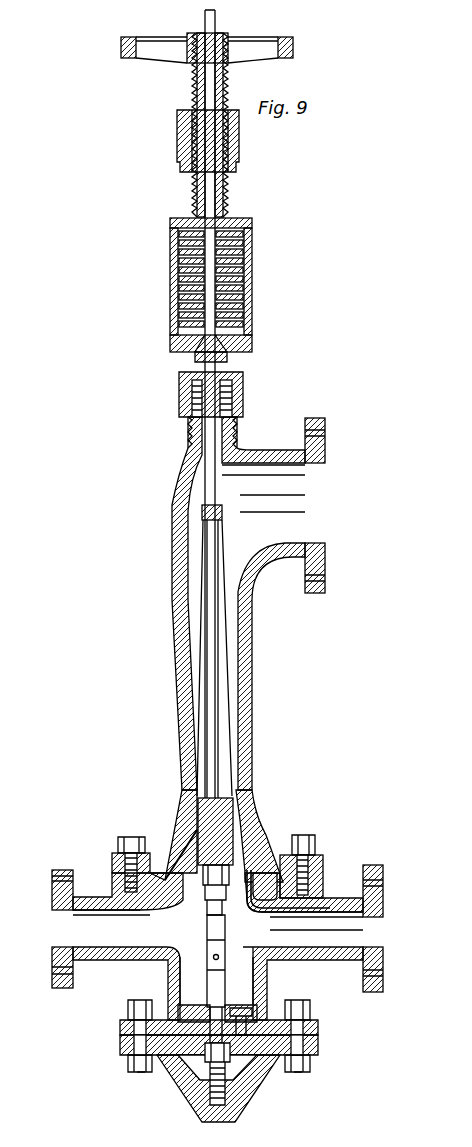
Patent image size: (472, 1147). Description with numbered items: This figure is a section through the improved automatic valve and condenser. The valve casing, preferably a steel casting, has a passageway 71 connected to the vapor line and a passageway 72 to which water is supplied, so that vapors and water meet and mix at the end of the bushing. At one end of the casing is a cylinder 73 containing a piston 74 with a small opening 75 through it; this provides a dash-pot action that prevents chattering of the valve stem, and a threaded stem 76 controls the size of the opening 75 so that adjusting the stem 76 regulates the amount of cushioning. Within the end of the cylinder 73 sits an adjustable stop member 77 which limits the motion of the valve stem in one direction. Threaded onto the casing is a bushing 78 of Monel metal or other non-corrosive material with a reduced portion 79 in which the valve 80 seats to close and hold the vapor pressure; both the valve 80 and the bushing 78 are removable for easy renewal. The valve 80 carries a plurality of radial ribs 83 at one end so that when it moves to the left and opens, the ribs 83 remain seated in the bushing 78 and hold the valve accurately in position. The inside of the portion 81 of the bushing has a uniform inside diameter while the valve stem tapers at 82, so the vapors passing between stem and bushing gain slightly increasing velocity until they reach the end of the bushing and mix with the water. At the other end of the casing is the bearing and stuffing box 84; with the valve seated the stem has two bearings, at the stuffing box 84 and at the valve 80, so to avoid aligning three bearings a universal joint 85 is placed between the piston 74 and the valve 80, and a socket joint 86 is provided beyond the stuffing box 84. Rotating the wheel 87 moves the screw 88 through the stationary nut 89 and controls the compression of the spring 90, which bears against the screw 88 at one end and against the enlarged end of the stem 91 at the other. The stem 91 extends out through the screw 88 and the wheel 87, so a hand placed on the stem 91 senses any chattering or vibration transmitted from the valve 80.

The passageway 71 is at (313, 942).
The passageway 72 is at (117, 945).
The cylinder 73 is at (272, 976).
The piston 74 is at (188, 1008).
The small opening 75 is at (240, 1008).
The threaded stem 76 is at (232, 1062).
The adjustable stop member 77 is at (205, 1050).
The bushing 78 is at (250, 846).
The reduced portion 79 is at (243, 870).
The valve 80 is at (301, 900).
The portion of bushing 81 is at (186, 822).
The taper of valve stem 82 is at (258, 832).
The radial ribs 83 is at (205, 885).
The bearing and stuffing box 84 is at (243, 405).
The universal joint 85 is at (207, 960).
The socket joint 86 is at (227, 357).
The wheel 87 is at (293, 50).
The screw 88 is at (228, 185).
The stationary nut 89 is at (239, 150).
The spring 90 is at (252, 275).
The stem 91 is at (204, 18).